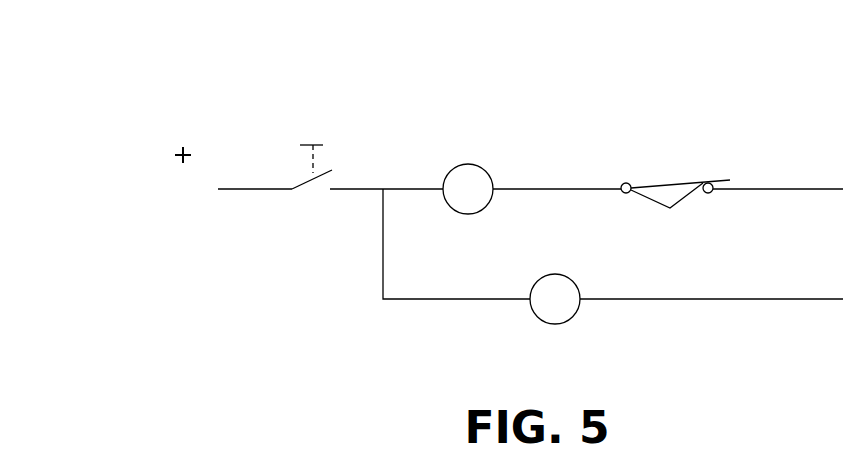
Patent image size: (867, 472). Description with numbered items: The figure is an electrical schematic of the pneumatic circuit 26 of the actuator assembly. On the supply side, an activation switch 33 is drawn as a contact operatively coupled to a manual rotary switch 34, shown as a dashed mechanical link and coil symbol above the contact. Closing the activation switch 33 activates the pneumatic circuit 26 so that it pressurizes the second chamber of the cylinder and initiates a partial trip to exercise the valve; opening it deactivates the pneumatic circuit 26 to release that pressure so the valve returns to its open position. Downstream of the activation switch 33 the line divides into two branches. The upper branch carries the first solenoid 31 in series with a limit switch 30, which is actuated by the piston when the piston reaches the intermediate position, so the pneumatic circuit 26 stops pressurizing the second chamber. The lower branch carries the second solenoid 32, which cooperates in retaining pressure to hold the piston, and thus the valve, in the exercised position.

The pneumatic circuit 26 is at (250, 63).
The limit switch 30 is at (678, 185).
The first solenoid 31 is at (468, 164).
The second solenoid 32 is at (580, 308).
The activation switch 33 is at (315, 190).
The manual rotary switch 34 is at (316, 144).